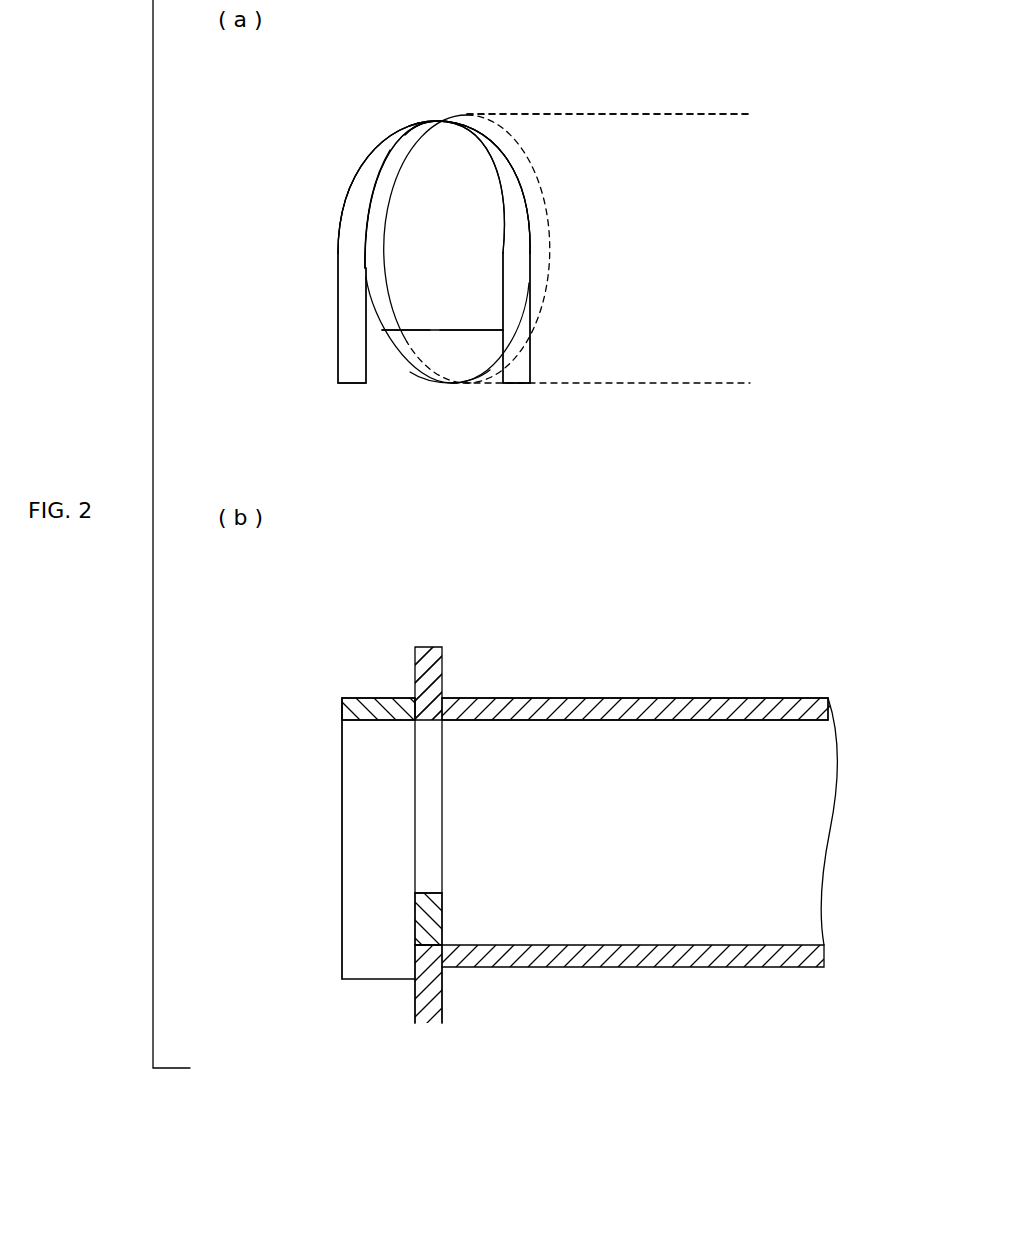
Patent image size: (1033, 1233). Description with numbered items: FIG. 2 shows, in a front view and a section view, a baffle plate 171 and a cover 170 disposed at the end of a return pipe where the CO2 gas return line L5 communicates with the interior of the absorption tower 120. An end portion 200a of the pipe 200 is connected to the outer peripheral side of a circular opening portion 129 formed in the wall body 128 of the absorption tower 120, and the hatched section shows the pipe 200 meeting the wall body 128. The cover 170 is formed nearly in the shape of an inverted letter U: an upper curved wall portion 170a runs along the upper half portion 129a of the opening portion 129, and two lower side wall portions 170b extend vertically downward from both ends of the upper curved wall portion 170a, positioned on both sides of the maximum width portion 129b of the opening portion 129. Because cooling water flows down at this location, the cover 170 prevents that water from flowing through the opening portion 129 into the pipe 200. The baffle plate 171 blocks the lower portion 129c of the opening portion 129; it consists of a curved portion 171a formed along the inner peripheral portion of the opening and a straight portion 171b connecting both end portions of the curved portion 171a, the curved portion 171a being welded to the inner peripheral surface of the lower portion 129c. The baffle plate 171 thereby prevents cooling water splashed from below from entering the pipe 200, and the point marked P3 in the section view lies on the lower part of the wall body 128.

The absorption tower 120 is at (443, 655).
The wall body 128 is at (422, 92).
The opening portion 129 is at (384, 197).
The upper half portion 129a is at (415, 120).
The maximum width portion 129b is at (365, 250).
The lower portion 129c is at (450, 384).
The cover 170 is at (352, 351).
The upper curved wall portion 170a is at (475, 147).
The lower side wall portion 170b is at (338, 294).
The baffle plate 171 is at (425, 350).
The curved portion 171a is at (397, 363).
The straight portion 171b is at (470, 330).
The pipe 200 is at (657, 113).
The end portion 200a is at (560, 113).
The CO2 gas return line L5 is at (724, 113).
The point P3 is at (444, 1002).